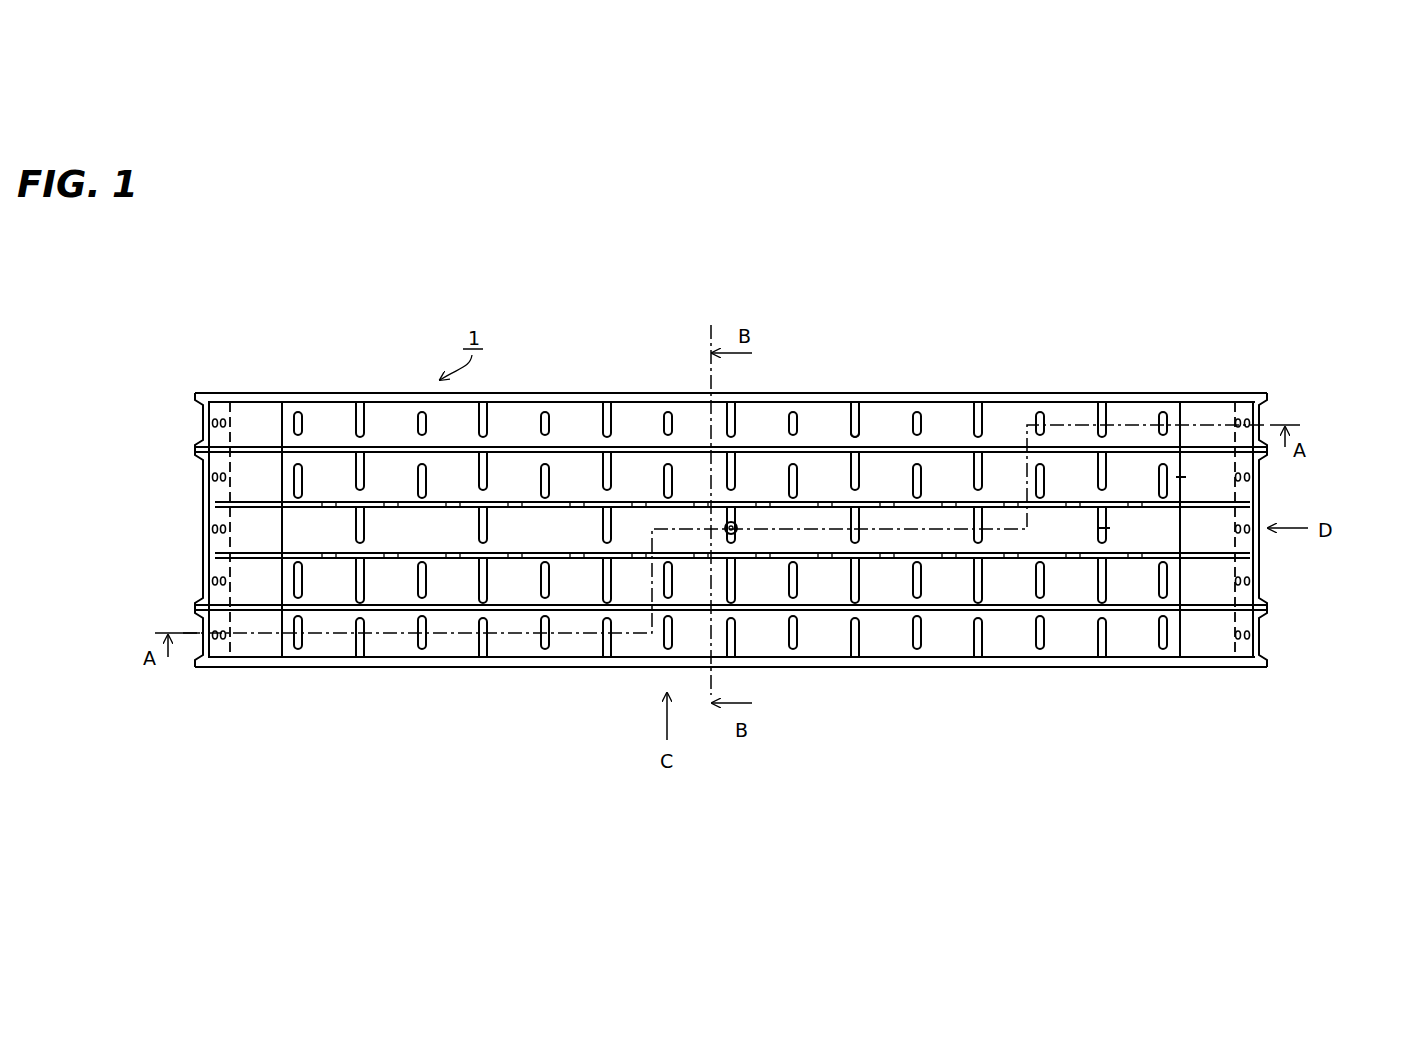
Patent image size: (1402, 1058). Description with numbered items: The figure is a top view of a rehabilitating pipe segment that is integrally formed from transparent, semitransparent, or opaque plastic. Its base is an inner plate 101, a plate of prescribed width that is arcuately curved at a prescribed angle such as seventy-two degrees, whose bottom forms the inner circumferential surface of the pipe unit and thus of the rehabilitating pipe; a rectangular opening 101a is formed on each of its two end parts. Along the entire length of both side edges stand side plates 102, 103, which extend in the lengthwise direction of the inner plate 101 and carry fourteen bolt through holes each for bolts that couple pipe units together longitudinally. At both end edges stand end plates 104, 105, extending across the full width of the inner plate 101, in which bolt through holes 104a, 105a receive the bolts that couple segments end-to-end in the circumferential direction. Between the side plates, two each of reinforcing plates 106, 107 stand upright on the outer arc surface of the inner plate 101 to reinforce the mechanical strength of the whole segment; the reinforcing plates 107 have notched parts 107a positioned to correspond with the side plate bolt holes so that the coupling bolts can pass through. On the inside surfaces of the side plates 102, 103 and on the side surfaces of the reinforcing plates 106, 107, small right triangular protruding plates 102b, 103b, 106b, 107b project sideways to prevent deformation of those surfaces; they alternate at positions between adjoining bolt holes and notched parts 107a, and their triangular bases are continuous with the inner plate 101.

The inner plate 101 is at (778, 590).
The rectangular opening 101a is at (284, 645).
The side plate 102 is at (880, 663).
The protruding plate 102b is at (848, 645).
The side plate 103 is at (856, 437).
The protruding plate 103b is at (848, 412).
The end plate 104 is at (198, 450).
The bolt through hole 104a is at (215, 420).
The end plate 105 is at (1255, 577).
The bolt through hole 105a is at (1243, 640).
The reinforcing plate 106 is at (930, 447).
The protruding plate 106b is at (982, 478).
The reinforcing plate 107 is at (1056, 500).
The notched part 107a is at (1068, 500).
The protruding plate 107b is at (1182, 478).